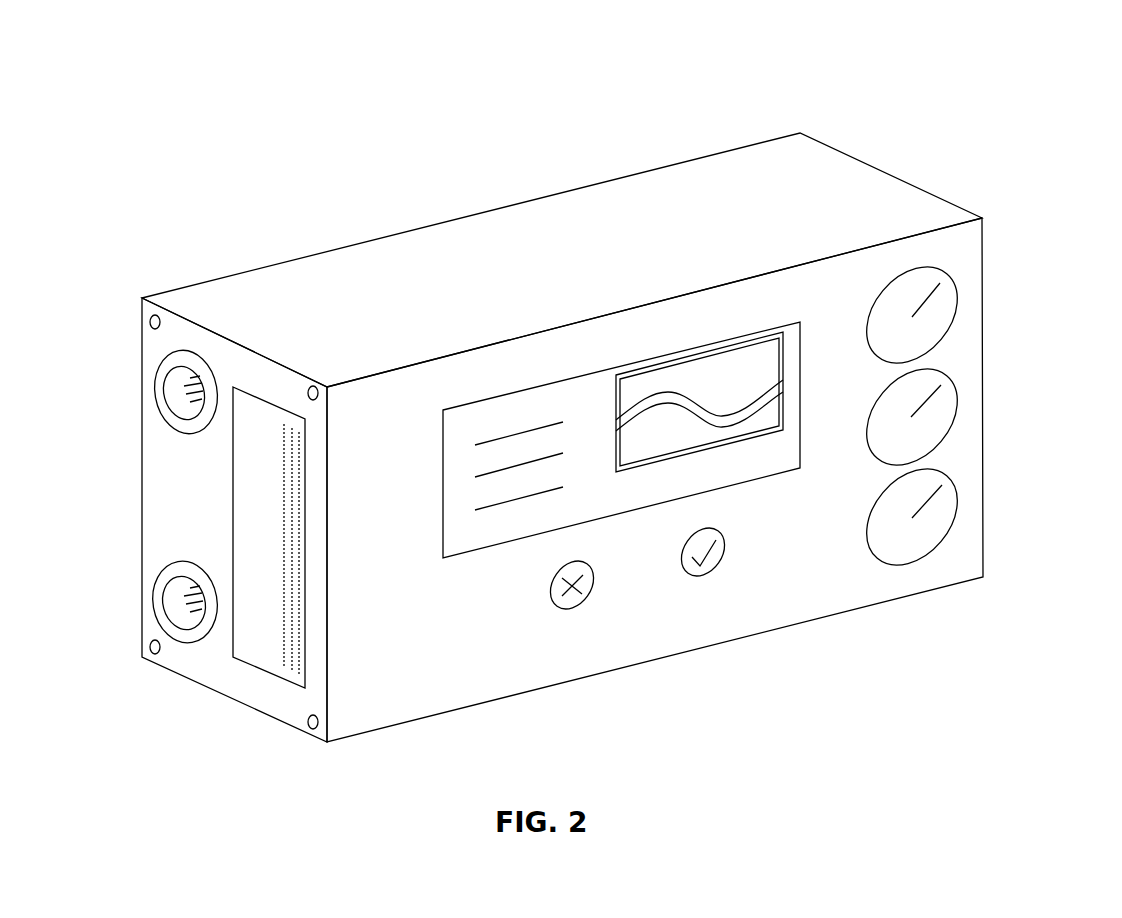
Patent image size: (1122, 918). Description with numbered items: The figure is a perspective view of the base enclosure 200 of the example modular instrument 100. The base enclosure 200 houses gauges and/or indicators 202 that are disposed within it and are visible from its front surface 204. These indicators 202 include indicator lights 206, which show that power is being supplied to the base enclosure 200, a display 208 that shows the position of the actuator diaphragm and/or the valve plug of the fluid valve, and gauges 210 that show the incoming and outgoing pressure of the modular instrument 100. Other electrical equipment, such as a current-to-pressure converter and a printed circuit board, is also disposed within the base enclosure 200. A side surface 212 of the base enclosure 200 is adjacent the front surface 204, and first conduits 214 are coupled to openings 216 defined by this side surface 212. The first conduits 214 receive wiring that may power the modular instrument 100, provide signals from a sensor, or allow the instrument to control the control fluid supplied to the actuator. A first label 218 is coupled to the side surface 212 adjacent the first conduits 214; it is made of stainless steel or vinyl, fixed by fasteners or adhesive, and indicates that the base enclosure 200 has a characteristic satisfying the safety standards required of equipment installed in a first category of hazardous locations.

The modular instrument 100 is at (963, 63).
The base enclosure 200 is at (892, 177).
The indicators 202 is at (928, 643).
The front surface 204 is at (453, 637).
The indicator lights 206 is at (703, 575).
The display 208 is at (723, 340).
The gauges 210 is at (957, 407).
The side surface 212 is at (158, 502).
The first conduits 214 is at (157, 372).
The openings 216 is at (183, 392).
The first label 218 is at (278, 675).